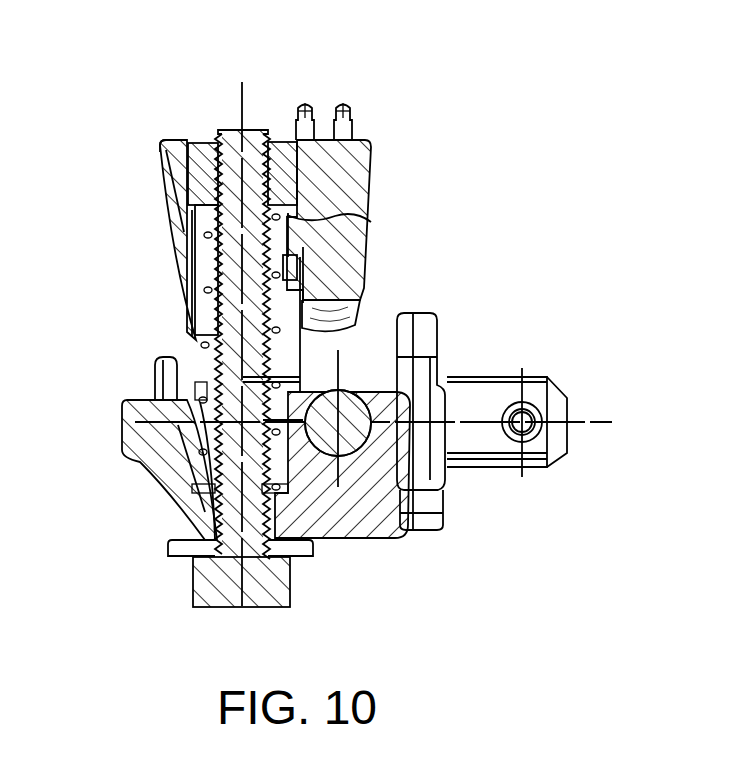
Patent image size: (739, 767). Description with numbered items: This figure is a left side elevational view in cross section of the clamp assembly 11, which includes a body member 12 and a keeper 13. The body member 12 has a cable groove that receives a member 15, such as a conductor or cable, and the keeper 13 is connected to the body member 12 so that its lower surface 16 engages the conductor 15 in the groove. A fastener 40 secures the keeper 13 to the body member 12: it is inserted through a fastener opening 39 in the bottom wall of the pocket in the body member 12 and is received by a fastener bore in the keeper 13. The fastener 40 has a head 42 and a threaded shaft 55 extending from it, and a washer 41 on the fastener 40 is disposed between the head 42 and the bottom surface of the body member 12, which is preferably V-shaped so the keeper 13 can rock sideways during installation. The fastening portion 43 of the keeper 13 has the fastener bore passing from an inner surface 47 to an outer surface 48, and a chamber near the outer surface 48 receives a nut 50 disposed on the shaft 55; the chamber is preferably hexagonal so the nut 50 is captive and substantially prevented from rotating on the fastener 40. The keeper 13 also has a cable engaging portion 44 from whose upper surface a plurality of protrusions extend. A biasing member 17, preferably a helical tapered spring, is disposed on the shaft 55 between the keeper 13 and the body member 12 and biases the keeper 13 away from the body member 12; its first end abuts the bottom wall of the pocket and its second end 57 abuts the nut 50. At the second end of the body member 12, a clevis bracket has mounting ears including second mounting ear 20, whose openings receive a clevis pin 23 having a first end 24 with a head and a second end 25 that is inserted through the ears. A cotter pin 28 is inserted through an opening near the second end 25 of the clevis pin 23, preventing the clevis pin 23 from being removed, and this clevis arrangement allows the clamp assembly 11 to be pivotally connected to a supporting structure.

The clamp assembly 11 is at (422, 185).
The body member 12 is at (157, 489).
The keeper 13 is at (162, 182).
The member 15 is at (340, 390).
The lower surface 16 is at (352, 313).
The biasing member 17 is at (182, 298).
The second mounting ear 20 is at (445, 318).
The clevis pin 23 is at (492, 468).
The first end 24 is at (155, 387).
The second end 25 is at (567, 407).
The cotter pin 28 is at (532, 438).
The fastener opening 39 is at (200, 513).
The fastener 40 is at (230, 130).
The washer 41 is at (176, 557).
The head 42 is at (290, 590).
The fastening portion 43 is at (168, 222).
The cable engaging portion 44 is at (370, 170).
The inner surface 47 is at (193, 337).
The outer surface 48 is at (160, 142).
The nut 50 is at (198, 145).
The threaded shaft 55 is at (200, 352).
The second end 57 is at (300, 214).